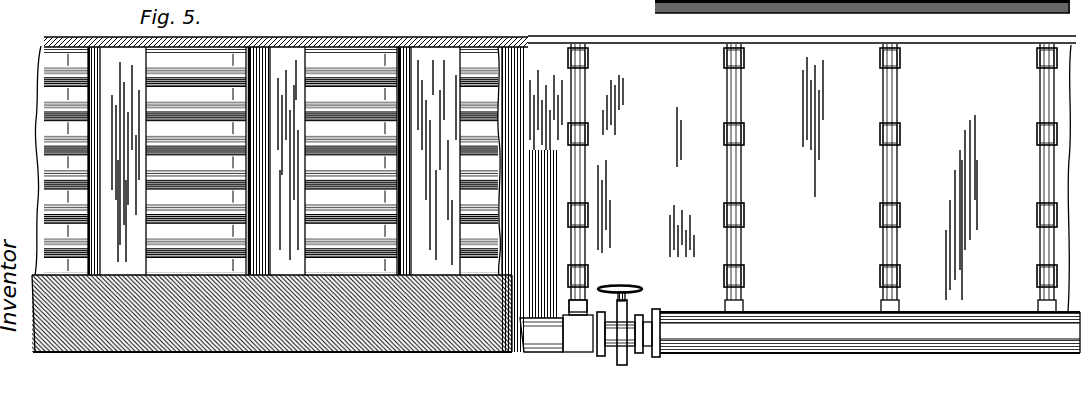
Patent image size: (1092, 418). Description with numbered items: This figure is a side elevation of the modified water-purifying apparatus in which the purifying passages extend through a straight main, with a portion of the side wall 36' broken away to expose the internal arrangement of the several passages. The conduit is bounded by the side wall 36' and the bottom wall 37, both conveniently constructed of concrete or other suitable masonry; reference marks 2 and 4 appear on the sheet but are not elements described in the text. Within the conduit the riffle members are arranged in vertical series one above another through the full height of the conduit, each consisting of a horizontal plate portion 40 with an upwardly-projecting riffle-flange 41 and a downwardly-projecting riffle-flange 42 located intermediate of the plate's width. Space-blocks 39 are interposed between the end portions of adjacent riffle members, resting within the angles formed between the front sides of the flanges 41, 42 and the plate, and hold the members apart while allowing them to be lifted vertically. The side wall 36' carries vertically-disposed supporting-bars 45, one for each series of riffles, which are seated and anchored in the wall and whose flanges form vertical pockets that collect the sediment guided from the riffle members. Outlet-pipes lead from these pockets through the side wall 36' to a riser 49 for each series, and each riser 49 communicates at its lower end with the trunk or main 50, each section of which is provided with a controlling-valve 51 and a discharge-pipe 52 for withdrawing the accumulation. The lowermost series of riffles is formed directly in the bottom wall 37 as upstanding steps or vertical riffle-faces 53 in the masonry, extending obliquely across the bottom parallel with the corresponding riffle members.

The wall 2 is at (23, 160).
The ceiling beam 4 is at (44, 47).
The side wall 36' is at (834, 178).
The bottom wall 37 is at (114, 347).
The space-blocks 39 is at (242, 126).
The horizontal plate portion 40 is at (196, 78).
The upwardly-projecting riffle-flange 41 is at (219, 75).
The downwardly-projecting riffle-flange 42 is at (246, 83).
The supporting-bar 45 is at (418, 113).
The riser 49 is at (728, 93).
The trunk or main 50 is at (547, 338).
The controlling-valve 51 is at (636, 291).
The discharge-pipe 52 is at (870, 332).
The vertical riffle-faces 53 is at (343, 274).